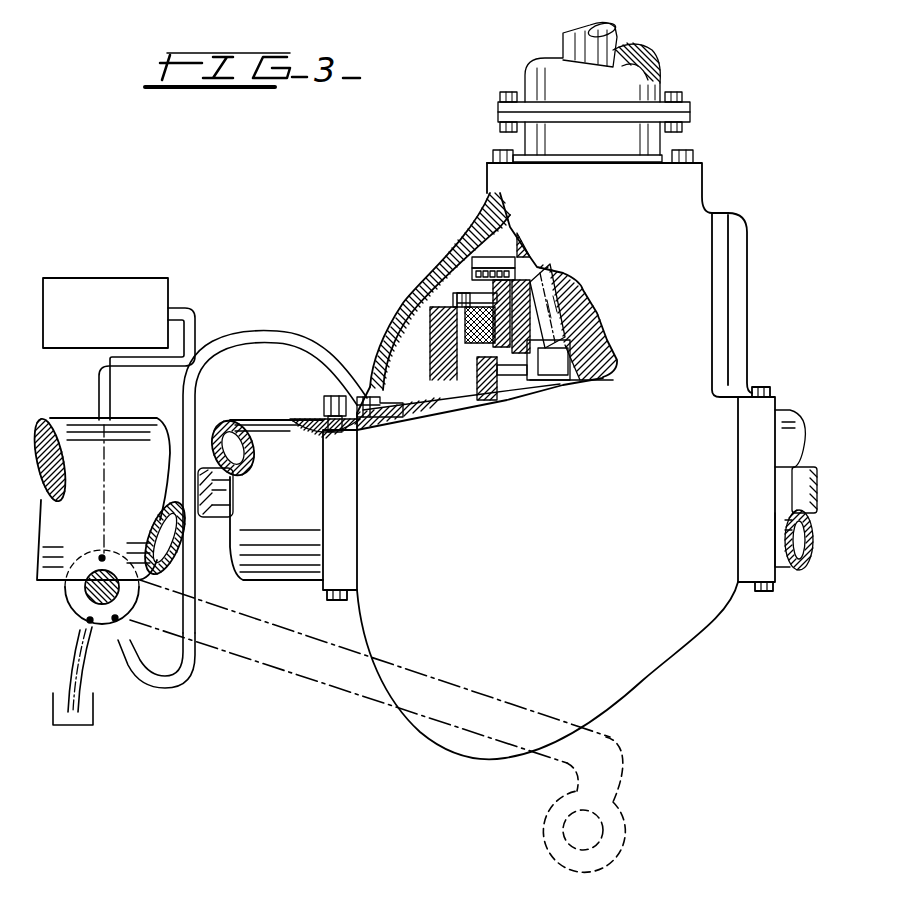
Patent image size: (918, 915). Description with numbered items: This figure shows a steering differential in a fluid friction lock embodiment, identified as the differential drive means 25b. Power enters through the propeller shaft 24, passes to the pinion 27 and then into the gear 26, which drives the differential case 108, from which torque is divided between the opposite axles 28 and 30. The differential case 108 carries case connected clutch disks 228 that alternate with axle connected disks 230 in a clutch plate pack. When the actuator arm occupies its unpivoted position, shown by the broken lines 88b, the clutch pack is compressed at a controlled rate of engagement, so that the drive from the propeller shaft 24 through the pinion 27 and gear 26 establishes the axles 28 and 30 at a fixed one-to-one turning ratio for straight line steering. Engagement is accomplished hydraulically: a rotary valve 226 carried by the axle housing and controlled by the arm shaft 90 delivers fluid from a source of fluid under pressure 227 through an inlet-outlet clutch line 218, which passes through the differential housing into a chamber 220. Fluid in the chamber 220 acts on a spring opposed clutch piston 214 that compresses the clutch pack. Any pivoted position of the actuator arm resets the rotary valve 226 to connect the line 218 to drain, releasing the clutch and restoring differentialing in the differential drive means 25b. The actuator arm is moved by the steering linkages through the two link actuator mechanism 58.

The propeller shaft 24 is at (563, 45).
The axle 30 is at (798, 487).
The axle 28 is at (243, 475).
The rotary valve 226 is at (76, 557).
The arm shaft 90 is at (90, 602).
The source of fluid under pressure 227 is at (118, 278).
The inlet-outlet clutch line 218 is at (232, 340).
The chamber 220 is at (440, 383).
The differential drive means 25b is at (413, 283).
The differential case 108 is at (440, 340).
The clutch piston 214 is at (455, 307).
The axle connected disks 230 is at (463, 307).
The case connected clutch disks 228 is at (466, 315).
The gear 26 is at (519, 283).
The pinion 27 is at (560, 283).
The unpivoted position of actuator arm 88b is at (297, 675).
The two link actuator mechanism 58 is at (552, 794).